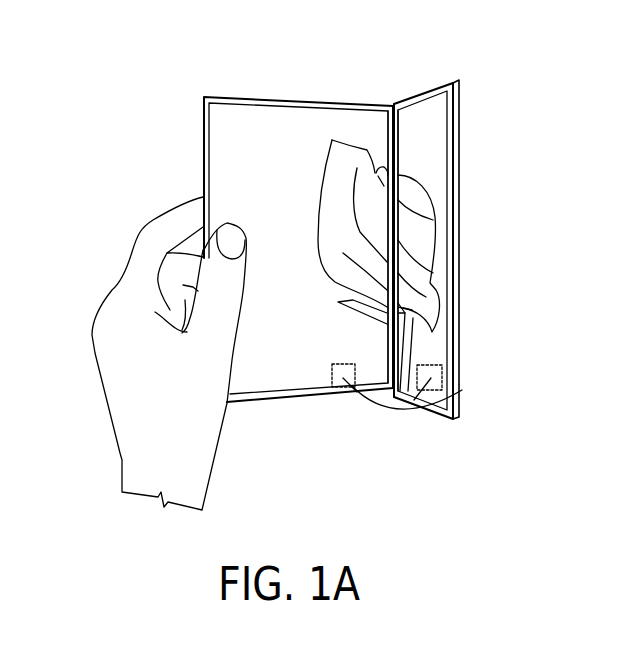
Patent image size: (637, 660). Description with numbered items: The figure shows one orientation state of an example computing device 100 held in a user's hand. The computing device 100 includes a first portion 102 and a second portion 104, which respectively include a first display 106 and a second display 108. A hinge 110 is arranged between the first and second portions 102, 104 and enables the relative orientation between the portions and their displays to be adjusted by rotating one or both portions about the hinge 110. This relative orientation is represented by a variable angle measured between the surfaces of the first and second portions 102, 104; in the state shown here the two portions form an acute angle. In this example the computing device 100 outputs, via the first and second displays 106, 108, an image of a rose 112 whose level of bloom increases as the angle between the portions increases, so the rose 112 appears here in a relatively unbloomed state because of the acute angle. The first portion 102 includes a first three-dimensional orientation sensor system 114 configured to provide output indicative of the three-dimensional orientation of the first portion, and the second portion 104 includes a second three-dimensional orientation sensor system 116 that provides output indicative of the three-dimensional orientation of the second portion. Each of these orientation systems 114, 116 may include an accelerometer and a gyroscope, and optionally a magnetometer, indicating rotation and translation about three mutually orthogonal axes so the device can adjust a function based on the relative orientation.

The computing device 100 is at (328, 48).
The first portion 102 is at (252, 97).
The second portion 104 is at (437, 86).
The first display 106 is at (253, 133).
The second display 108 is at (441, 134).
The hinge 110 is at (390, 130).
The rose 112 is at (338, 281).
The first three-dimensional orientation sensor system 114 is at (340, 386).
The second three-dimensional orientation sensor system 116 is at (437, 390).